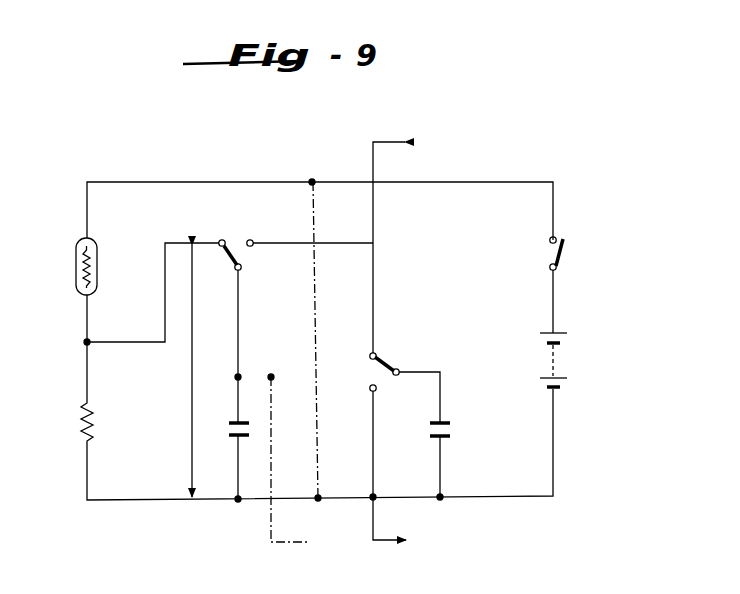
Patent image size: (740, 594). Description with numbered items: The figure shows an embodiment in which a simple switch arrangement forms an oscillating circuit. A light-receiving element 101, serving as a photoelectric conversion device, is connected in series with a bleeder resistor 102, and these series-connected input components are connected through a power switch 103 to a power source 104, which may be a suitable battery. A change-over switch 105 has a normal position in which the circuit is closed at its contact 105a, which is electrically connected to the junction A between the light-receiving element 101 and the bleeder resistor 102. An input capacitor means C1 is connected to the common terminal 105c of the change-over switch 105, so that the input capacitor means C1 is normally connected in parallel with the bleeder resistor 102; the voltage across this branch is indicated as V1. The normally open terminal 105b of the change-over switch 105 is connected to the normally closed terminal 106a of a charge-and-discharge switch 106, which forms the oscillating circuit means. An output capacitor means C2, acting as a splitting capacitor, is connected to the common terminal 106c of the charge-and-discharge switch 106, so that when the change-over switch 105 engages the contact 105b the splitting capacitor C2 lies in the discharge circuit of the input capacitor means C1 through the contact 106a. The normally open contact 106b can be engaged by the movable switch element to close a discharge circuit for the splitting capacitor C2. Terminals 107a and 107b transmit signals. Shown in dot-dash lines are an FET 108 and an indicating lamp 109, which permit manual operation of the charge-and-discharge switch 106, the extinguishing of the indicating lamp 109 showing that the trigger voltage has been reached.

The light-receiving element 101 is at (98, 265).
The bleeder resistor 102 is at (96, 420).
The power switch 103 is at (548, 246).
The power source 104 is at (553, 360).
The change-over switch 105 is at (229, 240).
The contact 105a is at (219, 241).
The normally open terminal 105b is at (252, 243).
The common terminal 105c is at (241, 269).
The charge-and-discharge switch 106 is at (383, 366).
The normally closed terminal 106a is at (369, 357).
The normally open contact 106b is at (370, 391).
The common terminal 106c is at (404, 372).
The terminal 107a is at (401, 237).
The terminal 107b is at (416, 471).
The FET 108 is at (292, 368).
The indicating lamp 109 is at (322, 292).
The junction A is at (85, 345).
The voltage V1 is at (189, 371).
The input capacitor means C1 is at (232, 437).
The output capacitor means C2 is at (452, 434).